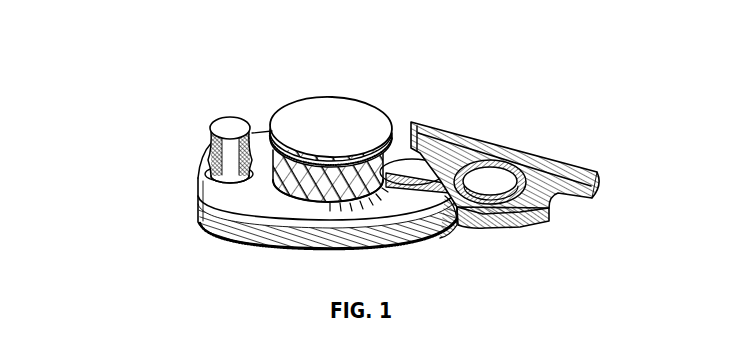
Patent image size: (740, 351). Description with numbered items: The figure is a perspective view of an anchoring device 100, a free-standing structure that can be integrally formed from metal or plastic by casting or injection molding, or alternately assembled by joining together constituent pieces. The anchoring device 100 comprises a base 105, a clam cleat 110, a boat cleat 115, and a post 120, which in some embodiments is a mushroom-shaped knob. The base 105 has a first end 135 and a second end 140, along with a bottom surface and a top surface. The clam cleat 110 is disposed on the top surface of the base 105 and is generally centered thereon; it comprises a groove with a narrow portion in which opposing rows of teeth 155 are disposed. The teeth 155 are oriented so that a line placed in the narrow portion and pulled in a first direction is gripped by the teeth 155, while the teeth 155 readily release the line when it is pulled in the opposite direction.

The anchoring device 100 is at (243, 80).
The base 105 is at (260, 243).
The clam cleat 110 is at (350, 110).
The boat cleat 115 is at (497, 143).
The post 120 is at (230, 125).
The first end 135 is at (453, 262).
The second end 140 is at (179, 199).
The teeth 155 is at (333, 204).